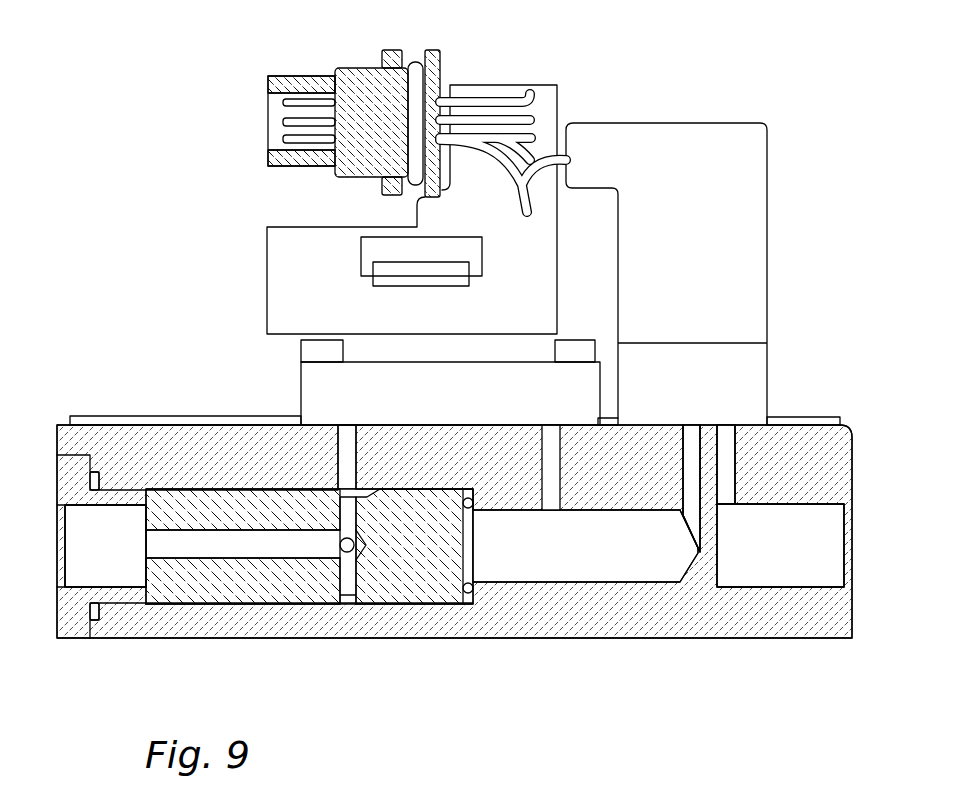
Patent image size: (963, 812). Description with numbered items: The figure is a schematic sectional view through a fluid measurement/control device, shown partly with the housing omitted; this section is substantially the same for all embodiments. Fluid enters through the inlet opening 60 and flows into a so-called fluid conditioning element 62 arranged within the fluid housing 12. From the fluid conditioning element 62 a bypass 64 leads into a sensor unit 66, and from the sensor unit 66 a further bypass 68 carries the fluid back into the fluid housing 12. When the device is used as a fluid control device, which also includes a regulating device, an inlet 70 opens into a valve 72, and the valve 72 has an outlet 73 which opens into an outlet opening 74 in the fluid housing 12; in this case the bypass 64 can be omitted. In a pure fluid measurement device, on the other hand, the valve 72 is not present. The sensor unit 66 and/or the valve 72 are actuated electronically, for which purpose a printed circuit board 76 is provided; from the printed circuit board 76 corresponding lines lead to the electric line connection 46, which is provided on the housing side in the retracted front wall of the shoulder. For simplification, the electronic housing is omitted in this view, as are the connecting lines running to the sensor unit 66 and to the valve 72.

The fluid housing 12 is at (661, 622).
The electric line connection 46 is at (356, 82).
The inlet opening 60 is at (75, 545).
The fluid conditioning element 62 is at (410, 575).
The bypass 64 is at (342, 450).
The sensor unit 66 is at (317, 392).
The further bypass 68 is at (548, 465).
The inlet 70 is at (697, 440).
The valve 72 is at (745, 246).
The outlet 73 is at (727, 448).
The outlet opening 74 is at (808, 550).
The printed circuit board 76 is at (547, 100).